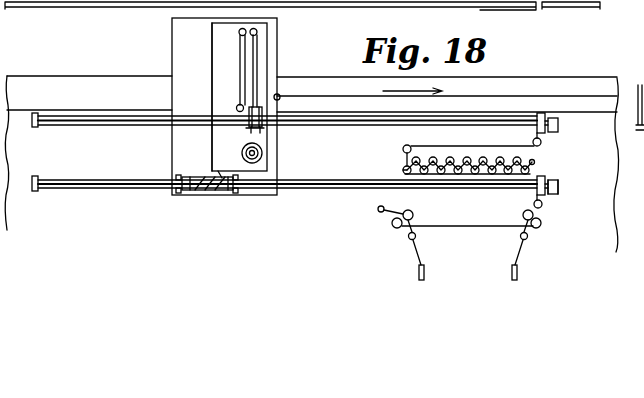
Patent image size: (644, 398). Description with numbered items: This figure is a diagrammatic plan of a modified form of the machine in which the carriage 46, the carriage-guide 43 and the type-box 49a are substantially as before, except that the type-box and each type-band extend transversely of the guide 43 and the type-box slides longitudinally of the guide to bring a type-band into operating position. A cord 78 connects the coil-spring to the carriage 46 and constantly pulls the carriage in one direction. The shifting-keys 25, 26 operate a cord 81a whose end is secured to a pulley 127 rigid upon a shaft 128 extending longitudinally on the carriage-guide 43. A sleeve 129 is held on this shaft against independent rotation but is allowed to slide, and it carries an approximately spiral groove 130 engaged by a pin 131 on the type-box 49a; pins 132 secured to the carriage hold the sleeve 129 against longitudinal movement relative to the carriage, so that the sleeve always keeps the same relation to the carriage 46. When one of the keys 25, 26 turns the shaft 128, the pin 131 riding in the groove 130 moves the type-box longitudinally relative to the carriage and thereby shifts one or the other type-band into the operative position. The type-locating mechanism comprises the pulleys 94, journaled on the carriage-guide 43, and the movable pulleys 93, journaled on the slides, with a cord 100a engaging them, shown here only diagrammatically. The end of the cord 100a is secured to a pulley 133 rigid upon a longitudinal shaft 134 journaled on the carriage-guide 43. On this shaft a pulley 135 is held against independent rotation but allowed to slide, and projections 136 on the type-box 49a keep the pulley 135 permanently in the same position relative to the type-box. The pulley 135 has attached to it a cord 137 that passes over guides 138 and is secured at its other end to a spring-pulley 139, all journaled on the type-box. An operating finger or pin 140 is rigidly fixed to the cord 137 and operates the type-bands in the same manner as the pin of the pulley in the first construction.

The cord 78 is at (448, 164).
The carriage-guide 43 is at (88, 153).
The carriage 46 is at (226, 106).
The type-box 49a is at (218, 87).
The cord 137 is at (240, 60).
The guides 138 is at (258, 33).
The operating finger or pin 140 is at (236, 108).
The projections 136 is at (248, 130).
The pulley 135 is at (263, 130).
The spring-pulley 139 is at (263, 156).
The pin 131 is at (220, 177).
The sleeve 129 is at (207, 190).
The spiral groove 130 is at (216, 190).
The pins 132 is at (176, 193).
The longitudinal shaft 134 is at (361, 124).
The shaft 128 is at (346, 189).
The pulley 127 is at (543, 176).
The cord 100a is at (498, 147).
The movable pulleys 93 is at (436, 164).
The pulleys 94 is at (403, 170).
The pulley 133 is at (541, 141).
The cord 81a is at (455, 227).
The shifting-key 26 is at (421, 257).
The shifting-key 25 is at (515, 266).